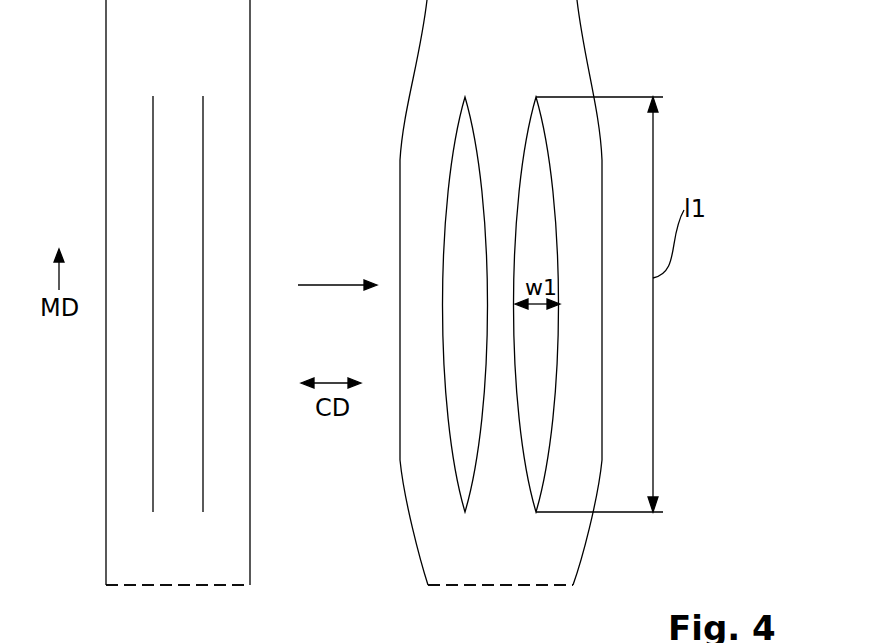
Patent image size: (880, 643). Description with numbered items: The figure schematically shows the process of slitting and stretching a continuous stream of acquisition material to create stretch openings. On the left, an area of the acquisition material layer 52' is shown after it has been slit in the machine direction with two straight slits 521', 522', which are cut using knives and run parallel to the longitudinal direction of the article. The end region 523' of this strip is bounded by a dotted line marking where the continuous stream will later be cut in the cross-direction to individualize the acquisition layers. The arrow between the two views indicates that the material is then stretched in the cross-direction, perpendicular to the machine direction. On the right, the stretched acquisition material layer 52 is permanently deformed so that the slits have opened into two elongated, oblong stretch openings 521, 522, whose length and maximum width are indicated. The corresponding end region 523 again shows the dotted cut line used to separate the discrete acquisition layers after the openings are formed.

The acquisition material layer 52' is at (133, 292).
The slit 521' is at (148, 272).
The slit 522' is at (224, 272).
The end portion (prior art) 523' is at (178, 614).
The stretched acquisition material layer 52 is at (535, 292).
The stretch opening 521 is at (457, 273).
The stretch opening 522 is at (547, 273).
The end portion 523 is at (500, 614).